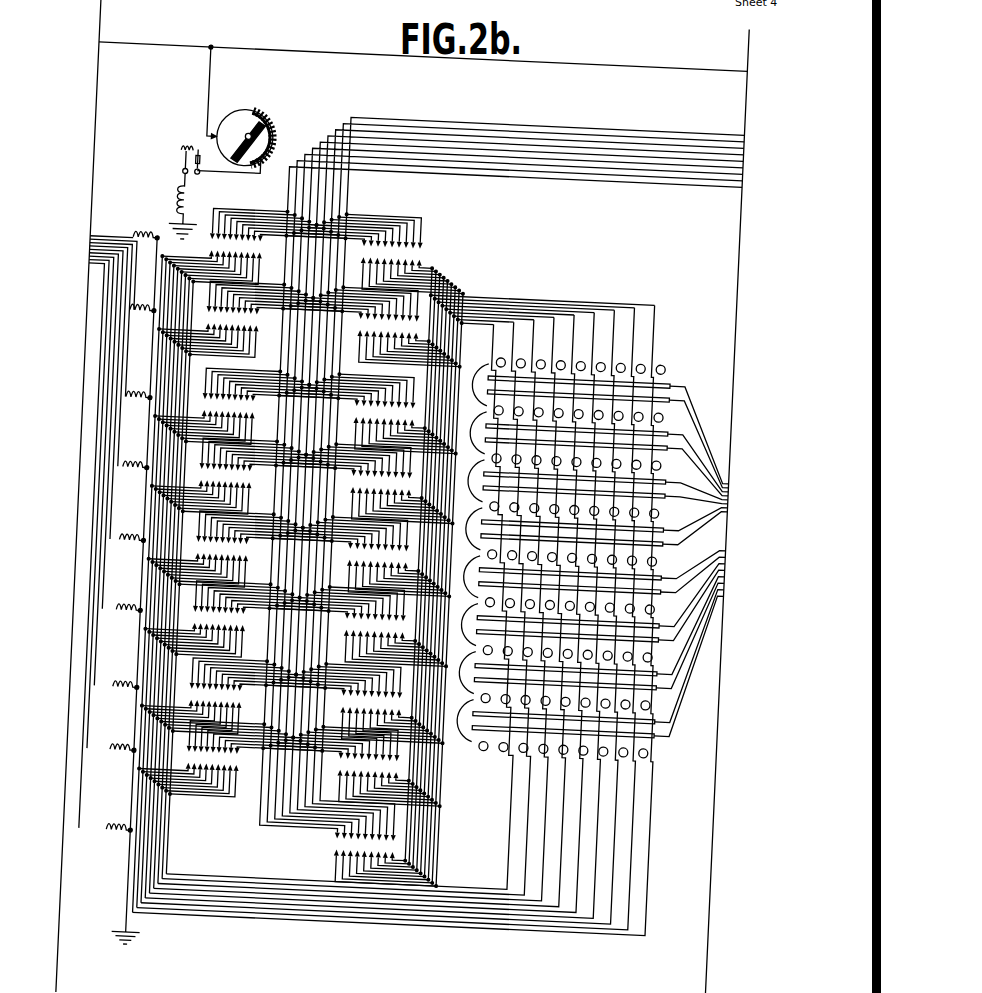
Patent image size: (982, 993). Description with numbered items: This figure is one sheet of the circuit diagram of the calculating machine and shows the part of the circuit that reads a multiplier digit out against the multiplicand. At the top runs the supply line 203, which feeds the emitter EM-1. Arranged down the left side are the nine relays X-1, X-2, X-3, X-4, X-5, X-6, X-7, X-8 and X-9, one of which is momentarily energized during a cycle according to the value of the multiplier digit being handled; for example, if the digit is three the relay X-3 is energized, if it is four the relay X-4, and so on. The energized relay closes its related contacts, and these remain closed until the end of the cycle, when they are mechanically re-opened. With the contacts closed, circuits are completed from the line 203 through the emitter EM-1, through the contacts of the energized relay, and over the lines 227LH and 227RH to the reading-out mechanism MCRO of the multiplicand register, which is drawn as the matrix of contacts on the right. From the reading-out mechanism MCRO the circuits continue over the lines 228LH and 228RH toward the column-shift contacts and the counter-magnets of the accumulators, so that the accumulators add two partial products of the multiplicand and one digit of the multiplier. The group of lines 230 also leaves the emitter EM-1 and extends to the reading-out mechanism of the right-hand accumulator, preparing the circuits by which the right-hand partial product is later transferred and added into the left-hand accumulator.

The line 203 is at (160, 36).
The lines 230 is at (477, 118).
The right-hand line 227RH is at (512, 282).
The left-hand line 227LH is at (459, 905).
The right-hand line 228RH is at (698, 452).
The left-hand line 228LH is at (704, 712).
The reading-out mechanism of the multiplicand register MCRO is at (670, 345).
The emitter EM-1 is at (245, 121).
The relay X-1 is at (219, 248).
The relay X-2 is at (219, 321).
The relay X-3 is at (219, 408).
The relay X-4 is at (219, 478).
The relay X-5 is at (219, 551).
The relay X-6 is at (219, 621).
The relay X-7 is at (219, 698).
The relay X-8 is at (219, 761).
The relay X-9 is at (374, 838).